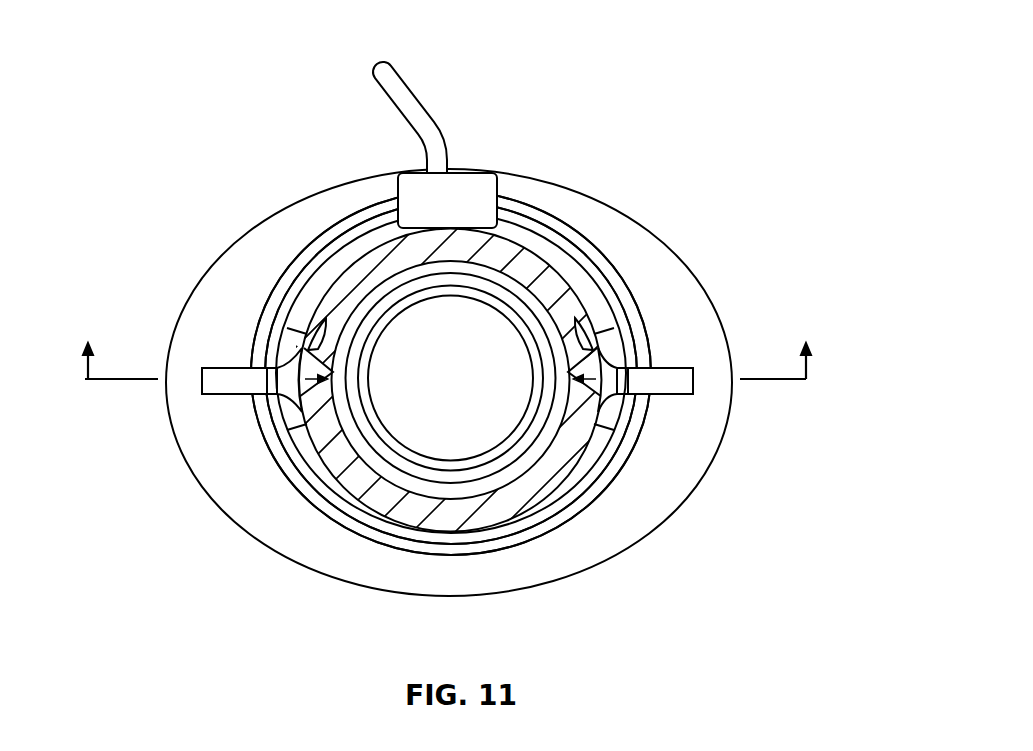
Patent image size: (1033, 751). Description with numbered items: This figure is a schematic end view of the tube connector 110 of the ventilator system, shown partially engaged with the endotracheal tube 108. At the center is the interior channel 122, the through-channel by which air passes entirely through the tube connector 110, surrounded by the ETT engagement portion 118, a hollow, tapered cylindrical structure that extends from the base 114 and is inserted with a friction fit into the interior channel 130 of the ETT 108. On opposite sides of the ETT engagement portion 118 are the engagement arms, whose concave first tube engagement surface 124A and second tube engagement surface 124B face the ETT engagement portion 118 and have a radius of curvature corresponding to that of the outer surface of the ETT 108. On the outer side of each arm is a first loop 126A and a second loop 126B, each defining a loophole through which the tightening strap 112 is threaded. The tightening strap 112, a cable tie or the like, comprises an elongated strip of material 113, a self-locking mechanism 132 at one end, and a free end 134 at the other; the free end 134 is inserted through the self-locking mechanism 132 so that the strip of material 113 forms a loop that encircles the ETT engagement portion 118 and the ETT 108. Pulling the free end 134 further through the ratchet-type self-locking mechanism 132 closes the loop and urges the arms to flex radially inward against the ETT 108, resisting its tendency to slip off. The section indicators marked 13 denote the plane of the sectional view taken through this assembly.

The tube connector 110 is at (741, 146).
The tightening strap 112 is at (547, 197).
The base 114 is at (577, 243).
The strip of material 113 is at (305, 503).
The endotracheal tube 108 is at (578, 495).
The ETT engagement portion 118 is at (490, 486).
The interior channel 122 is at (437, 392).
The interior channel of the ETT 130 is at (486, 392).
The first tube engagement surface 124A is at (575, 318).
The second tube engagement surface 124B is at (326, 318).
The first loop 126A is at (670, 388).
The second loop 126B is at (201, 368).
The self-locking mechanism 132 is at (462, 190).
The free end 134 is at (392, 82).
The section line 13- 13 is at (450, 361).